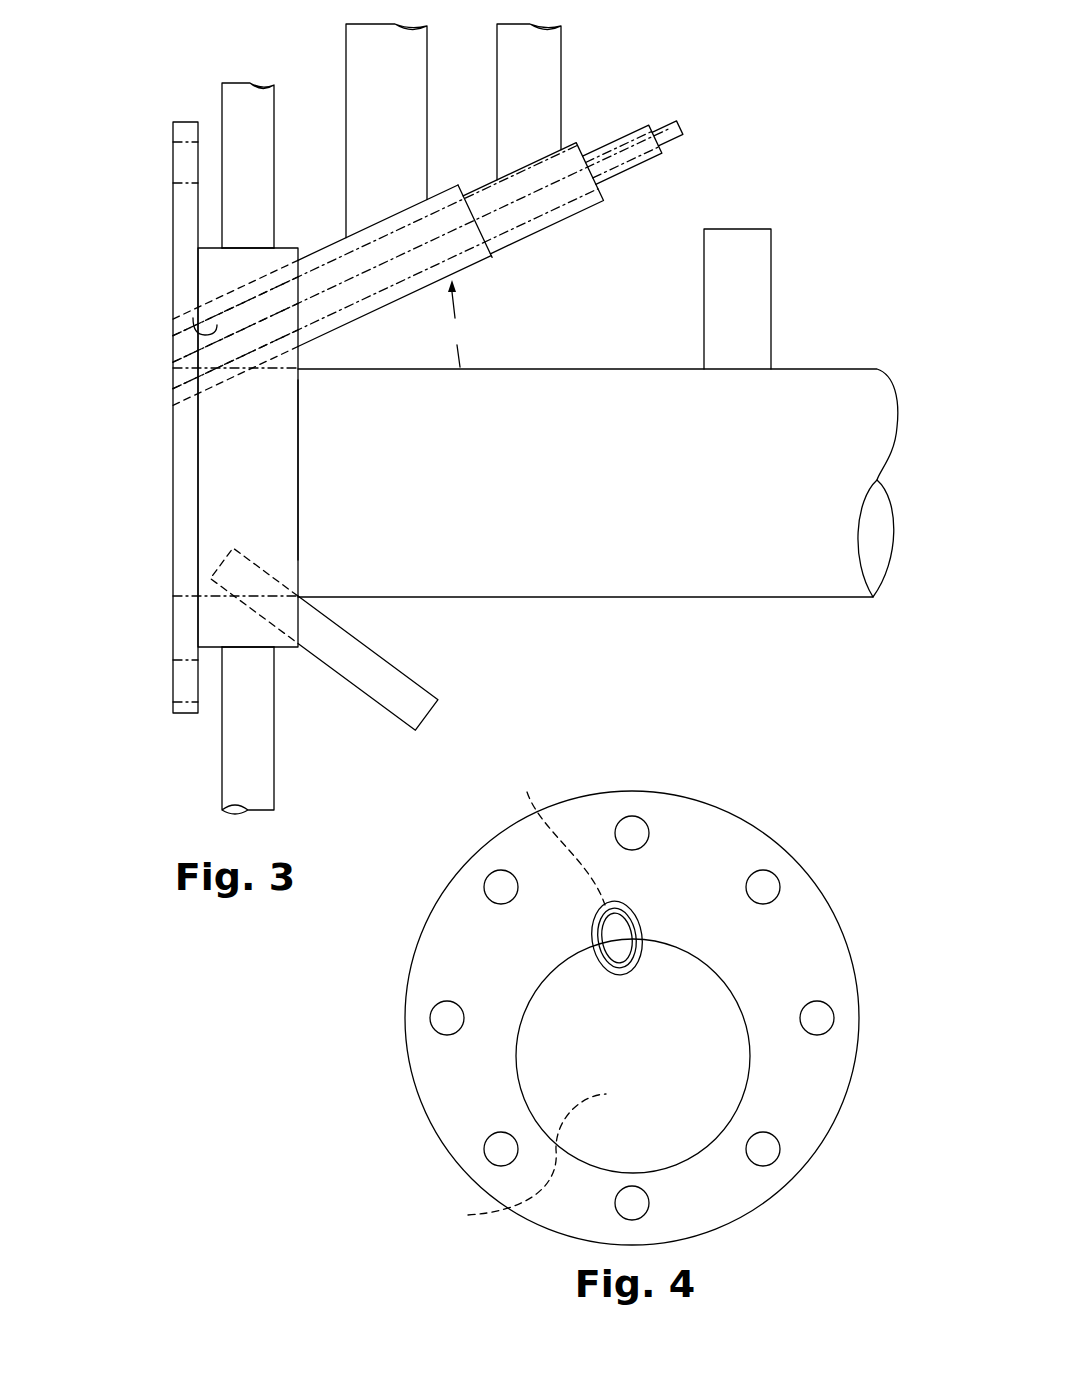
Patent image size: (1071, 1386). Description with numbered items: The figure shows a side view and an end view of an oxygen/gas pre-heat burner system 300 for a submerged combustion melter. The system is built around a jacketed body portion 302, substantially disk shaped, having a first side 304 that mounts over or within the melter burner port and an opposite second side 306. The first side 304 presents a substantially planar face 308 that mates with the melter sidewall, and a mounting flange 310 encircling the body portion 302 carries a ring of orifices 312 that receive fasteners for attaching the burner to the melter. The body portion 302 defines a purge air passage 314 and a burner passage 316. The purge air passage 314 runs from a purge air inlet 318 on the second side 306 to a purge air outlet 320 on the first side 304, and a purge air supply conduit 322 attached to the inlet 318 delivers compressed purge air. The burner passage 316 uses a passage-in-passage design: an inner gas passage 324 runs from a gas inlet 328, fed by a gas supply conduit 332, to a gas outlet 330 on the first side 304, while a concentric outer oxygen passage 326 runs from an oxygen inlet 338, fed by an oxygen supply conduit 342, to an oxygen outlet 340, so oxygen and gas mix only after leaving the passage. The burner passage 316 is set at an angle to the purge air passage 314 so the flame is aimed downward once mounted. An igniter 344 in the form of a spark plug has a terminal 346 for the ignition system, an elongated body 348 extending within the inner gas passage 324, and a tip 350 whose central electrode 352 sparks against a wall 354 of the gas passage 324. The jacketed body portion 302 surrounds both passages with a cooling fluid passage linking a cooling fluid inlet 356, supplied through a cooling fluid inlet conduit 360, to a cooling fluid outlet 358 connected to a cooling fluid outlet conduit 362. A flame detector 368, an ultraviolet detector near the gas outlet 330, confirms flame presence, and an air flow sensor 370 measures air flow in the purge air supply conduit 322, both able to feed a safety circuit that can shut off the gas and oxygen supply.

In FIG. 3, the oxygen/gas pre-heat burner system 300 is at (122, 90).
In FIG. 4, the oxygen/gas pre-heat burner system 300 is at (843, 1172).
In FIG. 3, the jacketed body portion 302 is at (205, 470).
In FIG. 3, the first side 304 is at (163, 539).
In FIG. 4, the first side 304 is at (715, 850).
In FIG. 3, the second side 306 is at (316, 491).
In FIG. 3, the planar face 308 is at (197, 246).
In FIG. 4, the planar face 308 is at (695, 890).
In FIG. 3, the mounting flange 310 is at (185, 713).
In FIG. 4, the mounting flange 310 is at (408, 1000).
In FIG. 3, the orifices 312 is at (186, 142).
In FIG. 4, the orifices 312 is at (638, 830).
In FIG. 3, the purge air passage 314 is at (287, 405).
In FIG. 4, the purge air passage 314 is at (615, 1078).
In FIG. 3, the burner passage 316 is at (160, 356).
In FIG. 4, the burner passage 316 is at (605, 980).
In FIG. 3, the purge air inlet 318 is at (300, 448).
In FIG. 3, the purge air outlet 320 is at (163, 512).
In FIG. 4, the purge air outlet 320 is at (545, 1080).
In FIG. 3, the purge air supply conduit 322 is at (520, 390).
In FIG. 3, the inner gas passage 324 is at (488, 204).
In FIG. 4, the inner gas passage 324 is at (617, 935).
In FIG. 3, the outer oxygen passage 326 is at (322, 262).
In FIG. 4, the outer oxygen passage 326 is at (622, 963).
In FIG. 3, the gas inlet 328 is at (548, 152).
In FIG. 3, the gas outlet 330 is at (178, 408).
In FIG. 3, the gas supply conduit 332 is at (551, 58).
In FIG. 3, the oxygen inlet 338 is at (380, 226).
In FIG. 3, the oxygen outlet 340 is at (175, 331).
In FIG. 3, the oxygen supply conduit 342 is at (356, 86).
In FIG. 3, the igniter 344 is at (640, 175).
In FIG. 3, the terminal 346 is at (673, 128).
In FIG. 3, the elongated body 348 is at (470, 245).
In FIG. 3, the tip 350 is at (216, 354).
In FIG. 3, the central electrode 352 is at (180, 371).
In FIG. 3, the wall 354 is at (195, 325).
In FIG. 3, the cooling fluid inlet 356 is at (265, 648).
In FIG. 3, the cooling fluid outlet 358 is at (230, 245).
In FIG. 3, the cooling fluid inlet conduit 360 is at (262, 760).
In FIG. 3, the cooling fluid outlet conduit 362 is at (232, 110).
In FIG. 3, the flame detector 368 is at (350, 642).
In FIG. 3, the air flow sensor 370 is at (752, 306).